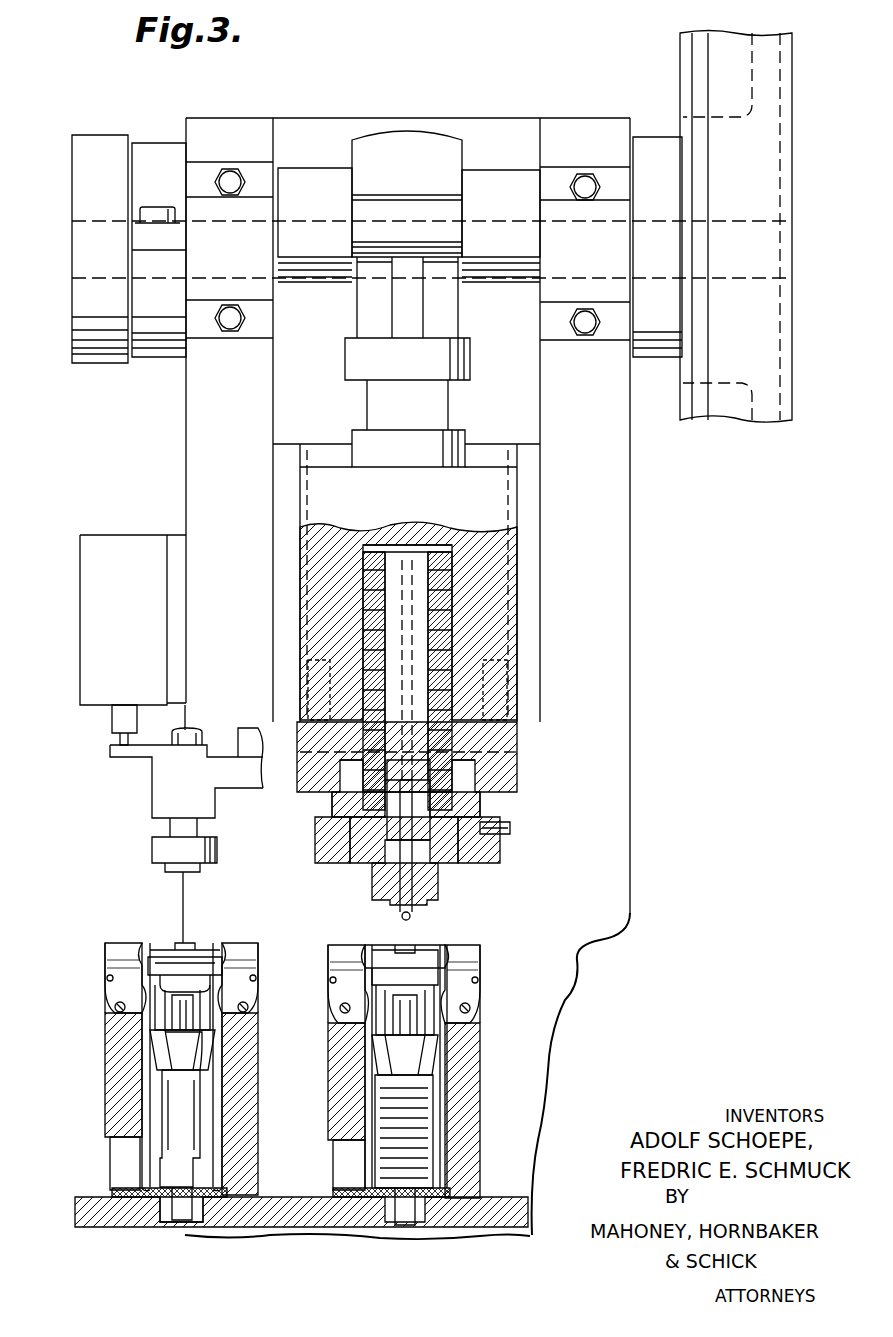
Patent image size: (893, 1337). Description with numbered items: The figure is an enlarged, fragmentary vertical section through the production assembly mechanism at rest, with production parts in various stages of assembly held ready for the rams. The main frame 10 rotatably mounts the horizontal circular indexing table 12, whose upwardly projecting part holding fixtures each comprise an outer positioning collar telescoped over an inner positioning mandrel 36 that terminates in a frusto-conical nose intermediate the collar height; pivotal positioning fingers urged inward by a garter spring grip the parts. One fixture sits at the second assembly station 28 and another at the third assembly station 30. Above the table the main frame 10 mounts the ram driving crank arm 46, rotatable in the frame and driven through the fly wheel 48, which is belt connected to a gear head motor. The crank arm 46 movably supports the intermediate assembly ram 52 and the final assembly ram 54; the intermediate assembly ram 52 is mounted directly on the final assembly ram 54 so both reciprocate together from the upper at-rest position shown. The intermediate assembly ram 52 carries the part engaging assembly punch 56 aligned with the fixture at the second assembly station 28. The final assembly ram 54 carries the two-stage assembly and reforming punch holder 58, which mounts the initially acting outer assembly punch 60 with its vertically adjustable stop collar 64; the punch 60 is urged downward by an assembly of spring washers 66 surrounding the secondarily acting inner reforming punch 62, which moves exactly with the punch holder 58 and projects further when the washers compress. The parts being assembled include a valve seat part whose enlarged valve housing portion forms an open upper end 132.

The main frame 10 is at (186, 415).
The indexing table 12 is at (90, 1230).
The second assembly station 28 is at (158, 1233).
The third assembly station 30 is at (405, 1240).
The inner positioning mandrel 36 is at (190, 1138).
The ram driving crank arm 46 is at (330, 168).
The fly wheel 48 is at (755, 188).
The intermediate assembly ram 52 is at (152, 779).
The final assembly ram 54 is at (520, 746).
The assembly punch 56 is at (160, 850).
The assembly and reforming punch holder 58 is at (490, 596).
The outer assembly punch 60 is at (440, 880).
The inner reforming punch 62 is at (412, 914).
The stop collar 64 is at (315, 840).
The spring washers 66 is at (366, 602).
The open upper end 132 is at (158, 950).